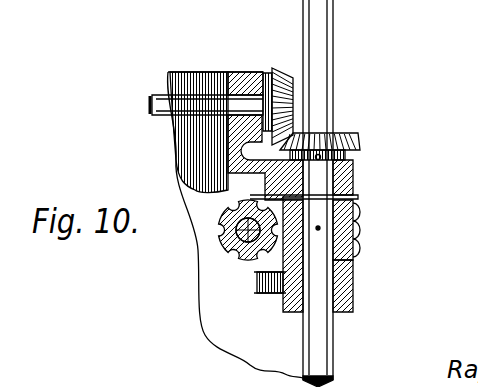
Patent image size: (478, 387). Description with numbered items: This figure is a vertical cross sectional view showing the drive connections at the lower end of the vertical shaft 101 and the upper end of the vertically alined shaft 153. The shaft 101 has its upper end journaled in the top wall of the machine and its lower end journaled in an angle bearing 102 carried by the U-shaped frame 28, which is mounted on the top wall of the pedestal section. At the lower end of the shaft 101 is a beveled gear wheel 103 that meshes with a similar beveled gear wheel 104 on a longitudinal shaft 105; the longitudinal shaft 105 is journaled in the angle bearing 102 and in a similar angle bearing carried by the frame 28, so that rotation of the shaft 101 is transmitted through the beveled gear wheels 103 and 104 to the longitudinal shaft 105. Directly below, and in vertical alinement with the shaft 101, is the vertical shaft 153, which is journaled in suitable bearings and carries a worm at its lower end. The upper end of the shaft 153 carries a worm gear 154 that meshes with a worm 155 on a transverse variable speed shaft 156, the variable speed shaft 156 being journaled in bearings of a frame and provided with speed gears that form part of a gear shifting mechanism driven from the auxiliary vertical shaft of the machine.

The U-shaped frame 28 is at (200, 80).
The shaft 101 is at (333, 47).
The angle bearing 102 is at (353, 183).
The beveled gear wheel 103 is at (350, 144).
The beveled gear wheel 104 is at (279, 70).
The longitudinal shaft 105 is at (152, 104).
The vertical shaft 153 is at (330, 336).
The worm gear 154 is at (361, 233).
The worm 155 is at (244, 231).
The variable speed shaft 156 is at (233, 244).